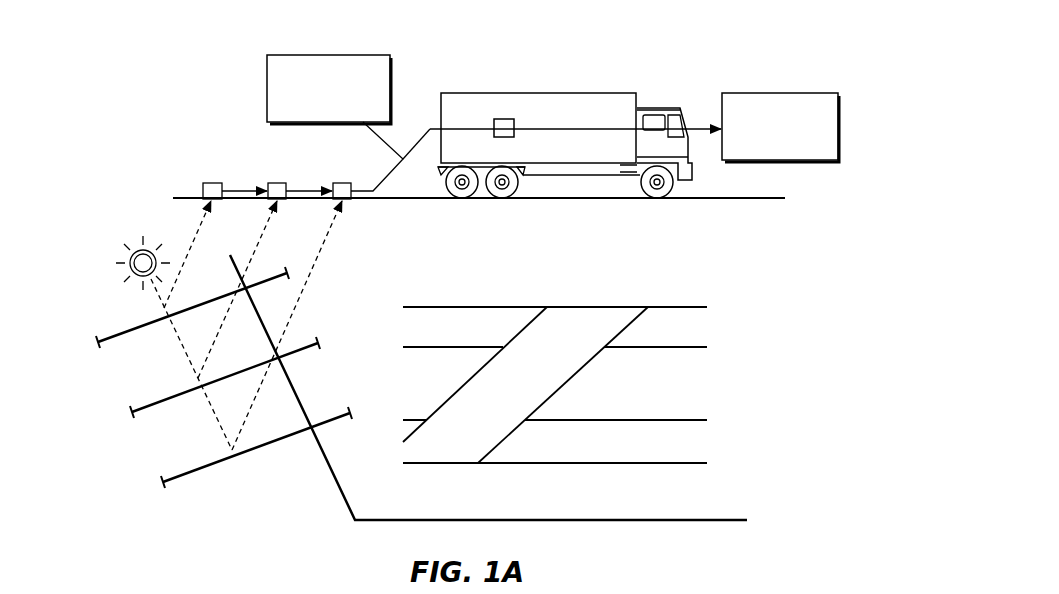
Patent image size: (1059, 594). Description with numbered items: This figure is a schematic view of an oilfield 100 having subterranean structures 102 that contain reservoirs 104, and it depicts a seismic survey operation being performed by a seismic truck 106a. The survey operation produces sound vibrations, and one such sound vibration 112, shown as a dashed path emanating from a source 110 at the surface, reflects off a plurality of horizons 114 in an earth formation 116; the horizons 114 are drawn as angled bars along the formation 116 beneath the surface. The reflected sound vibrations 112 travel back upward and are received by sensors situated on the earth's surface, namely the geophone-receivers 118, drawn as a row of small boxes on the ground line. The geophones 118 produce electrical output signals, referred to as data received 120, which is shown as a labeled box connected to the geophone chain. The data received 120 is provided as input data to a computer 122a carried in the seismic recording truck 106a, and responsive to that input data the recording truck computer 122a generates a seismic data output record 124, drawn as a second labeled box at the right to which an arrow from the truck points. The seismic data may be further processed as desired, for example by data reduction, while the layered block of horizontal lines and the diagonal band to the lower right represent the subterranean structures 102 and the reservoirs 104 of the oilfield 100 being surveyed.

The oilfield 100 is at (766, 37).
The subterranean structures 102 is at (680, 280).
The reservoirs 104 is at (666, 393).
The seismic truck 106a is at (608, 93).
The sun 110 is at (136, 252).
The sound vibration 112 is at (193, 243).
The horizons 114 is at (132, 329).
The earth formation 116 is at (327, 460).
The geophone-receivers 118 is at (341, 183).
The data received 120 is at (322, 55).
The computer 122a is at (503, 119).
The seismic data output record 124 is at (807, 93).